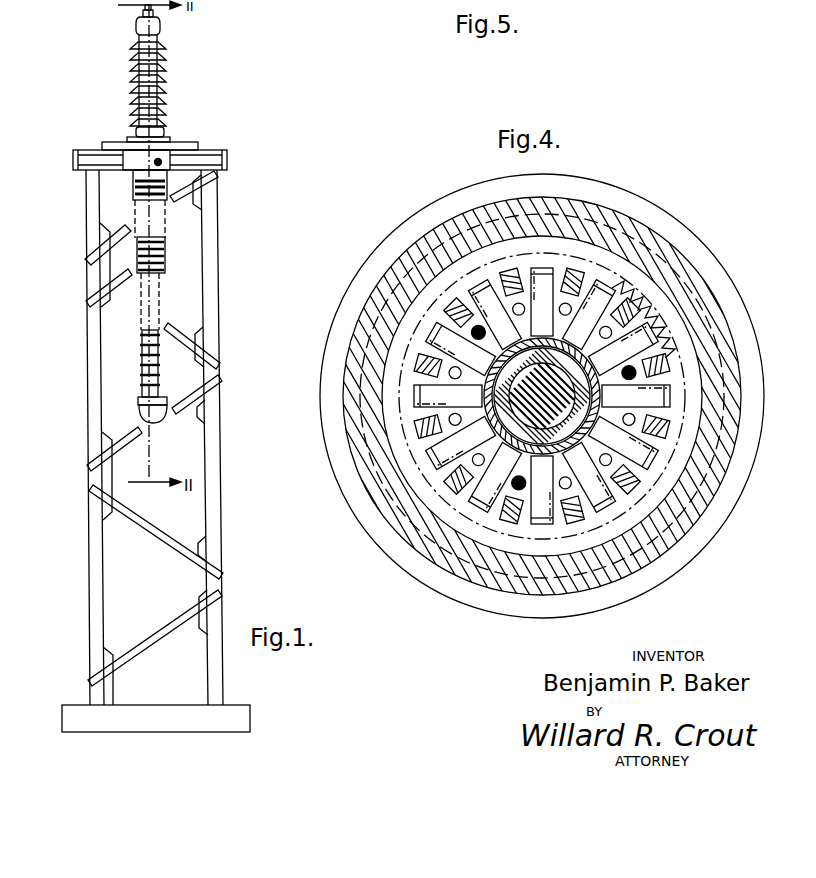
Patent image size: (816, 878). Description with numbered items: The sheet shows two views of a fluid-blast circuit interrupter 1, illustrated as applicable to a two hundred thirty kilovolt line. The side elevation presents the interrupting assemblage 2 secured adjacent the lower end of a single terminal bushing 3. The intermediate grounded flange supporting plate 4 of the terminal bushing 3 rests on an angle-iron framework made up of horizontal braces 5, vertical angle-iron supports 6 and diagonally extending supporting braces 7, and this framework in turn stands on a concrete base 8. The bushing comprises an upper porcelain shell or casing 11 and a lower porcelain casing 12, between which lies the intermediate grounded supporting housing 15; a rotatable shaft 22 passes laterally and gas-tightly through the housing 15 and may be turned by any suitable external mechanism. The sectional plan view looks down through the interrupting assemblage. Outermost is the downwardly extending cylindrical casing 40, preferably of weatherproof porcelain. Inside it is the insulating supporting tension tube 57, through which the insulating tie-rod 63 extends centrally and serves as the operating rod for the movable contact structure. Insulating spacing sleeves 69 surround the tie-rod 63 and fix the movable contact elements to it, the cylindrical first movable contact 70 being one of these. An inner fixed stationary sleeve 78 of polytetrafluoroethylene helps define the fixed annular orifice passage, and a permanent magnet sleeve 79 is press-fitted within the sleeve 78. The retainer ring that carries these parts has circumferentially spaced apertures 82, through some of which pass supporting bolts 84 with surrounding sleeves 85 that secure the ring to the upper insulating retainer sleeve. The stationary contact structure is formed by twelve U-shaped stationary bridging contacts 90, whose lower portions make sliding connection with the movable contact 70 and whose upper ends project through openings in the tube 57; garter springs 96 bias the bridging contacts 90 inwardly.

In FIG. 1, the circuit interrupter 1 is at (214, 83).
In FIG. 1, the interrupting assemblage 2 is at (178, 312).
In FIG. 1, the terminal bushing 3 is at (187, 129).
In FIG. 1, the intermediate grounded flange supporting plate 4 is at (195, 143).
In FIG. 1, the horizontal braces 5 is at (212, 150).
In FIG. 1, the vertical angle-iron supports 6 is at (220, 260).
In FIG. 1, the diagonally extending supporting braces 7 is at (129, 294).
In FIG. 1, the concrete base 8 is at (251, 710).
In FIG. 1, the porcelain shell 11 is at (163, 72).
In FIG. 1, the lower porcelain casing 12 is at (163, 245).
In FIG. 1, the intermediate grounded supporting housing 15 is at (133, 170).
In FIG. 1, the rotatable shaft 22 is at (155, 161).
In FIG. 4, the cylindrical casing 40 is at (659, 551).
In FIG. 4, the insulating supporting tension tube 57 is at (424, 426).
In FIG. 4, the insulating tie-rod 63 is at (482, 395).
In FIG. 4, the insulating spacing sleeves 69 is at (486, 354).
In FIG. 4, the first movable contact 70 is at (607, 397).
In FIG. 4, the inner fixed stationary sleeve 78 is at (599, 358).
In FIG. 4, the permanent magnet sleeve 79 is at (513, 322).
In FIG. 4, the apertures 82 is at (571, 486).
In FIG. 4, the supporting bolts 84 is at (634, 350).
In FIG. 4, the surrounding sleeves 85 is at (640, 369).
In FIG. 4, the U-shaped stationary bridging contacts 90 is at (494, 490).
In FIG. 4, the garter springs 96 is at (638, 308).